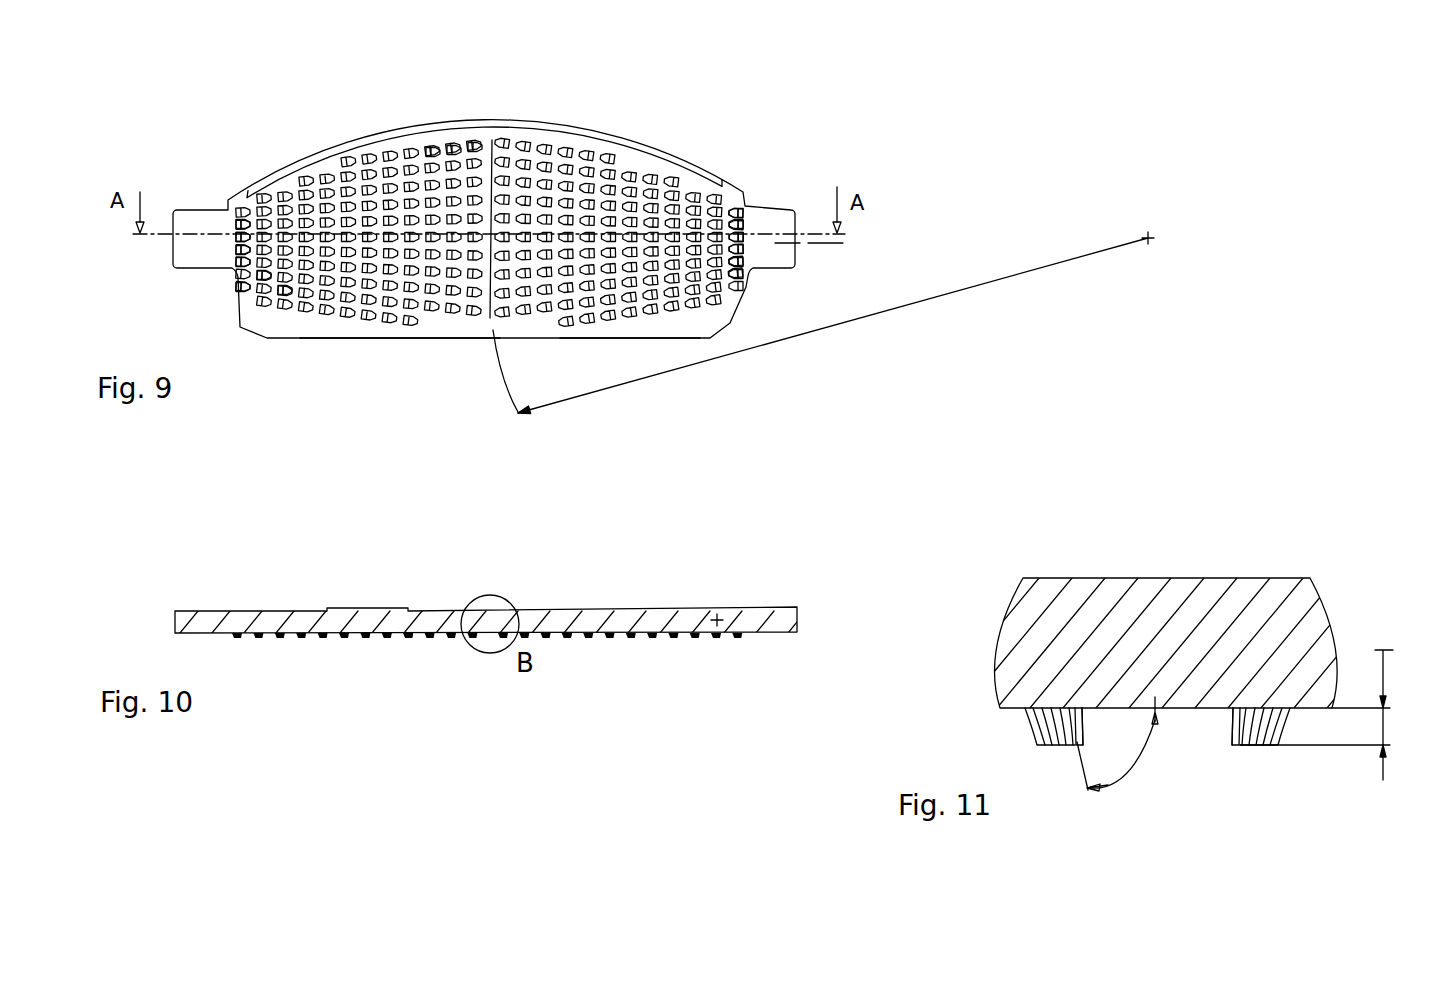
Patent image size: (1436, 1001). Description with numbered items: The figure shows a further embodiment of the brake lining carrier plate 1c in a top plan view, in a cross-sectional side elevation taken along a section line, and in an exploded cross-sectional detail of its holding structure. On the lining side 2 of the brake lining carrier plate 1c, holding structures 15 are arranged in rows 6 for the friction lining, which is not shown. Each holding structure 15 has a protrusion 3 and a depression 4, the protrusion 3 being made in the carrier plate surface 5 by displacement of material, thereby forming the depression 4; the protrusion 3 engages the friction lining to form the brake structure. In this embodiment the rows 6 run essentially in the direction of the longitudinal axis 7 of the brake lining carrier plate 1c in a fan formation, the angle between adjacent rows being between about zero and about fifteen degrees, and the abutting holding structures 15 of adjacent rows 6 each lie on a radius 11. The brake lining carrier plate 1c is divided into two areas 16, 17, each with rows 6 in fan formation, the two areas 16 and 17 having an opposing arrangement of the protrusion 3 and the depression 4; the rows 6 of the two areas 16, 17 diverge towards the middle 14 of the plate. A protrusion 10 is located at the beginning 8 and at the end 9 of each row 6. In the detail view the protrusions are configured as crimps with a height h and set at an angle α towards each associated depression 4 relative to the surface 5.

In FIG. 9, the brake lining carrier plate 1c is at (595, 125).
In FIG. 10, the brake lining carrier plate 1c is at (603, 582).
In FIG. 11, the brake lining carrier plate 1c is at (1198, 555).
In FIG. 9, the lining side 2 is at (282, 178).
In FIG. 11, the lining side 2 is at (1312, 710).
In FIG. 9, the protrusion 3 is at (412, 150).
In FIG. 10, the protrusion 3 is at (280, 638).
In FIG. 11, the protrusion 3 is at (1078, 746).
In FIG. 9, the depression 4 is at (470, 140).
In FIG. 9, the carrier plate surface 5 is at (320, 168).
In FIG. 11, the carrier plate surface 5 is at (1015, 713).
In FIG. 9, the rows 6 is at (232, 210).
In FIG. 9, the longitudinal axis 7 is at (808, 244).
In FIG. 9, the beginning of row 8 is at (237, 297).
In FIG. 9, the protrusion 10 is at (296, 290).
In FIG. 9, the radius 11 is at (897, 307).
In FIG. 9, the middle of the brake lining carrier plate 14 is at (489, 327).
In FIG. 10, the middle of the brake lining carrier plate 14 is at (489, 638).
In FIG. 10, the holding structure 15 is at (408, 638).
In FIG. 11, the holding structure 15 is at (1085, 735).
In FIG. 9, the first area 16 is at (405, 338).
In FIG. 9, the second area 17 is at (636, 338).
In FIG. 9, the end of row 9 is at (709, 186).